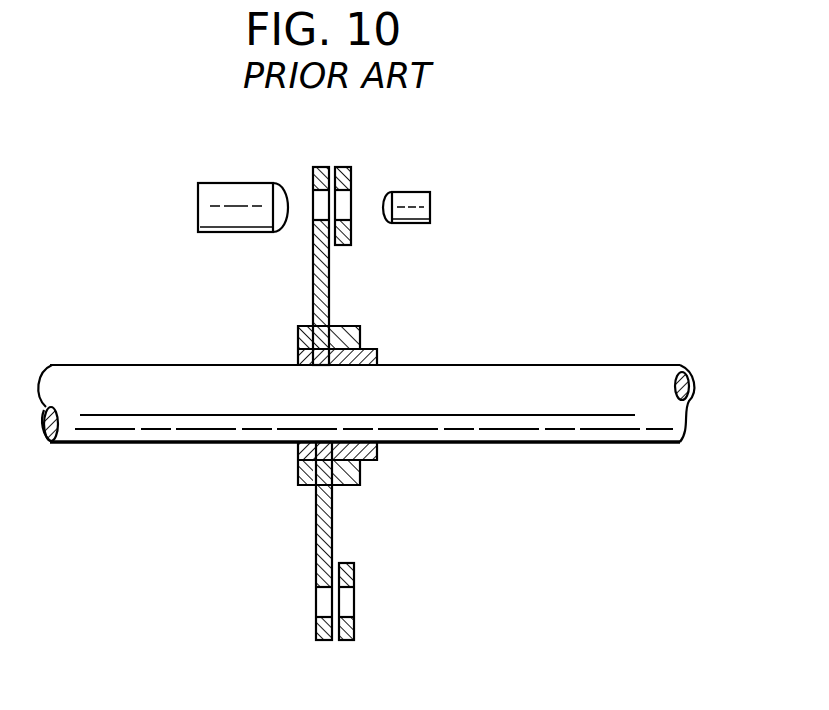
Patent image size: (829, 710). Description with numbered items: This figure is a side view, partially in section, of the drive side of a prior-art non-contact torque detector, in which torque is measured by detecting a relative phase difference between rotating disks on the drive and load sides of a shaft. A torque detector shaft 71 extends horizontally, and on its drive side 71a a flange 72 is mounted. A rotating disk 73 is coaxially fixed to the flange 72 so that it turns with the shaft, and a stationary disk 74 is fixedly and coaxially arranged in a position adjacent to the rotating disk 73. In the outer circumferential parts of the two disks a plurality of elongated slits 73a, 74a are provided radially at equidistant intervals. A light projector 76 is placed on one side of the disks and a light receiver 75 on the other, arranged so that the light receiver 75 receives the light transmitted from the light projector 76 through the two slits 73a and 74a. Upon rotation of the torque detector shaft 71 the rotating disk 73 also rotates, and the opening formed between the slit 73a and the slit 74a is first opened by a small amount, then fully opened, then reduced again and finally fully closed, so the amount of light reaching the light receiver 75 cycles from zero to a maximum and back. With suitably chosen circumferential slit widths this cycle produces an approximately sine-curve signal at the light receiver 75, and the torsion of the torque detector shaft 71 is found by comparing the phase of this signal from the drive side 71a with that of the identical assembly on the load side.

The torque detector shaft 71 is at (519, 338).
The drive side of the torque detector shaft 71a is at (600, 365).
The flange 72 is at (298, 340).
The rotating disk 73 is at (313, 272).
The slits of the rotating disk 73a is at (313, 196).
The stationary disk 74 is at (352, 184).
The slits of the stationary disk 74a is at (352, 202).
The light receiver 75 is at (433, 203).
The light projector 76 is at (222, 183).